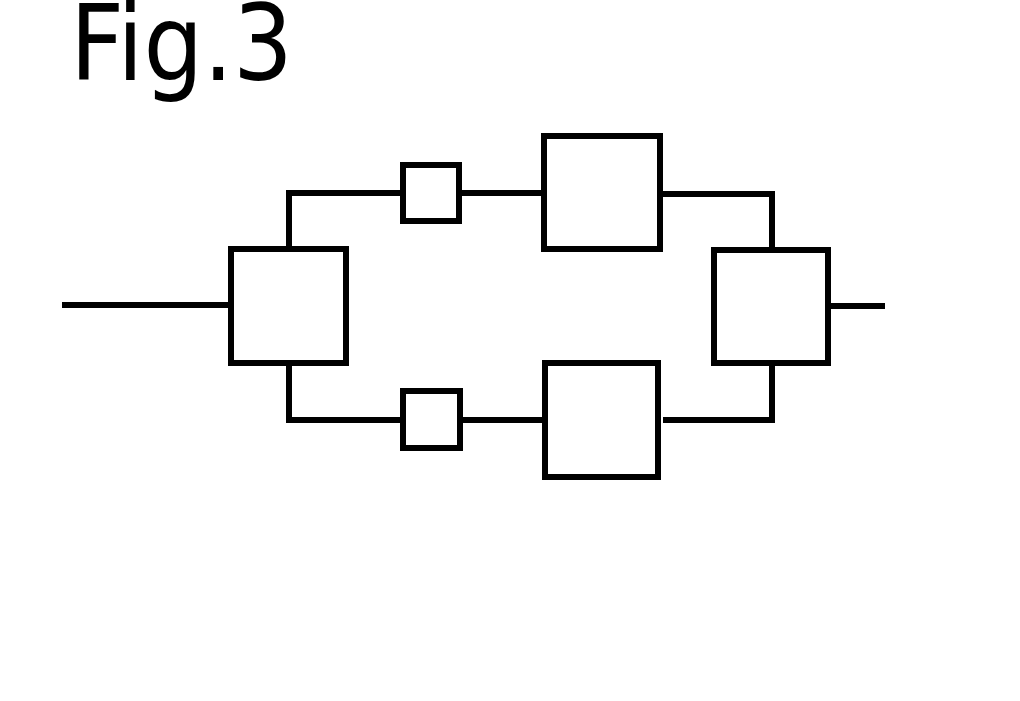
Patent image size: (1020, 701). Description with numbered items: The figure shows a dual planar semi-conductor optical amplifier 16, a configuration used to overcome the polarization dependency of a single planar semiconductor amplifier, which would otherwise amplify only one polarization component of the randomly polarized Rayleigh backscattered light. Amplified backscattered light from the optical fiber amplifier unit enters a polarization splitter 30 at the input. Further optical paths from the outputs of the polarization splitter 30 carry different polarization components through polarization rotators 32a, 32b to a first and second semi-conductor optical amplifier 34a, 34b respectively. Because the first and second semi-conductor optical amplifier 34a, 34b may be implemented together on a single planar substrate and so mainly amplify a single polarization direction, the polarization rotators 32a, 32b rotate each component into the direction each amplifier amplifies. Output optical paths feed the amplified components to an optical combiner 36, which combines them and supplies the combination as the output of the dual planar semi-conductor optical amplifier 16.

The dual planar semi-conductor optical amplifier 16 is at (224, 512).
The polarization splitter 30 is at (228, 333).
The polarization rotator 32a is at (428, 162).
The polarization rotator 32b is at (431, 452).
The first semi-conductor optical amplifier 34a is at (598, 134).
The second semi-conductor optical amplifier 34b is at (603, 481).
The optical combiner 36 is at (793, 247).